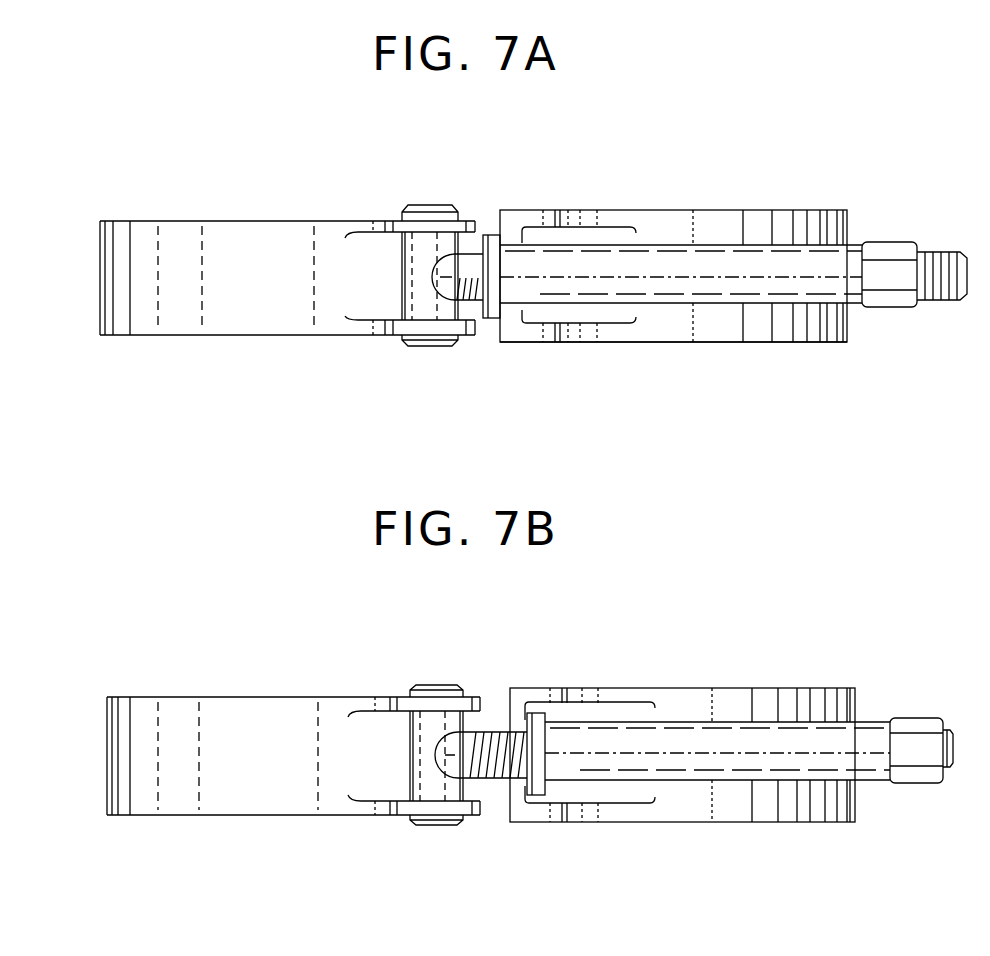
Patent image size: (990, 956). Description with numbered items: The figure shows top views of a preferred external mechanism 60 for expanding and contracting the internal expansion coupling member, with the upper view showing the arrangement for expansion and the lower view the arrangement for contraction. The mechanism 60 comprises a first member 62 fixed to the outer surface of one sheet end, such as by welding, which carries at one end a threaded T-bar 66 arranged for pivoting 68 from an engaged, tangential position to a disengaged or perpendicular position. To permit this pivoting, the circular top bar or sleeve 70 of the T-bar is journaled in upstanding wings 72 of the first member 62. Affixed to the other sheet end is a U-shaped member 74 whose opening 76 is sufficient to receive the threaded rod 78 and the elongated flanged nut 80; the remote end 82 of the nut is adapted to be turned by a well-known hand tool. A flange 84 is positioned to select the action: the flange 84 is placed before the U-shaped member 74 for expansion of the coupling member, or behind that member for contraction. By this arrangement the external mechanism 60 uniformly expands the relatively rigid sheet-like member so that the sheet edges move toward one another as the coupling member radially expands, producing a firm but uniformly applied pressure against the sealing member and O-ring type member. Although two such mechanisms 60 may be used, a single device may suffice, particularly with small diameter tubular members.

In FIG. 7A, the external mechanism 60 is at (556, 342).
In FIG. 7B, the external mechanism 60 is at (628, 818).
In FIG. 7A, the first member 62 is at (215, 223).
In FIG. 7B, the first member 62 is at (248, 705).
In FIG. 7A, the threaded T-bar 66 is at (470, 253).
In FIG. 7B, the threaded T-bar 66 is at (481, 755).
In FIG. 7A, the pivoting 68 is at (447, 205).
In FIG. 7B, the pivoting 68 is at (442, 686).
In FIG. 7A, the circular top bar or sleeve 70 is at (405, 285).
In FIG. 7B, the circular top bar or sleeve 70 is at (420, 778).
In FIG. 7A, the upstanding wings 72 is at (392, 218).
In FIG. 7B, the upstanding wings 72 is at (395, 696).
In FIG. 7A, the U-shaped member 74 is at (520, 210).
In FIG. 7A, the opening 76 is at (527, 242).
In FIG. 7A, the threaded rod 78 is at (943, 254).
In FIG. 7B, the threaded rod 78 is at (950, 732).
In FIG. 7A, the elongated flanged nut 80 is at (727, 263).
In FIG. 7B, the elongated flanged nut 80 is at (694, 770).
In FIG. 7A, the remote end 82 is at (888, 303).
In FIG. 7B, the remote end 82 is at (905, 778).
In FIG. 7A, the flange 84 is at (492, 320).
In FIG. 7B, the flange 84 is at (545, 713).